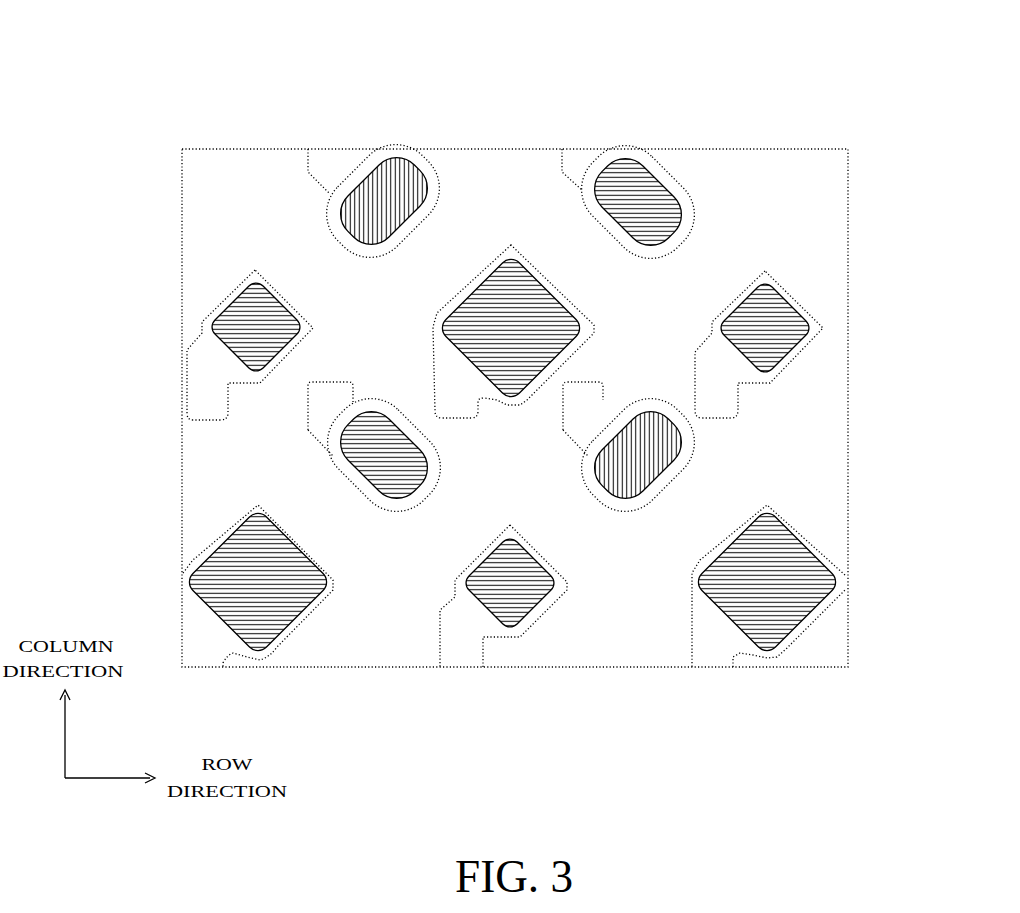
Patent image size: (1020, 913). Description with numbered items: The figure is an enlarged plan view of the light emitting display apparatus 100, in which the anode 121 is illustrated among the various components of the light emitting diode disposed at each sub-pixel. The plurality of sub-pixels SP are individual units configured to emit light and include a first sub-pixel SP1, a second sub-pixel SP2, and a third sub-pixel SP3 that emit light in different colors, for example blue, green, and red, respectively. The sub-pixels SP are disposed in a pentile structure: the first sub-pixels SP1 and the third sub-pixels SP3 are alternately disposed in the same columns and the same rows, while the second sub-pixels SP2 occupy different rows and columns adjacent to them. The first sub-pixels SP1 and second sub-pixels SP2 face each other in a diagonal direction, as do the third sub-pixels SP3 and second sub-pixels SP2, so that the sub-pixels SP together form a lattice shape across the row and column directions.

The light emitting display apparatus 100 is at (806, 45).
The anode 121 is at (573, 302).
The sub-pixels SP is at (258, 60).
The first sub-pixel SP1 is at (509, 250).
The second sub-pixel SP2 is at (394, 148).
The third sub-pixel SP3 is at (255, 275).